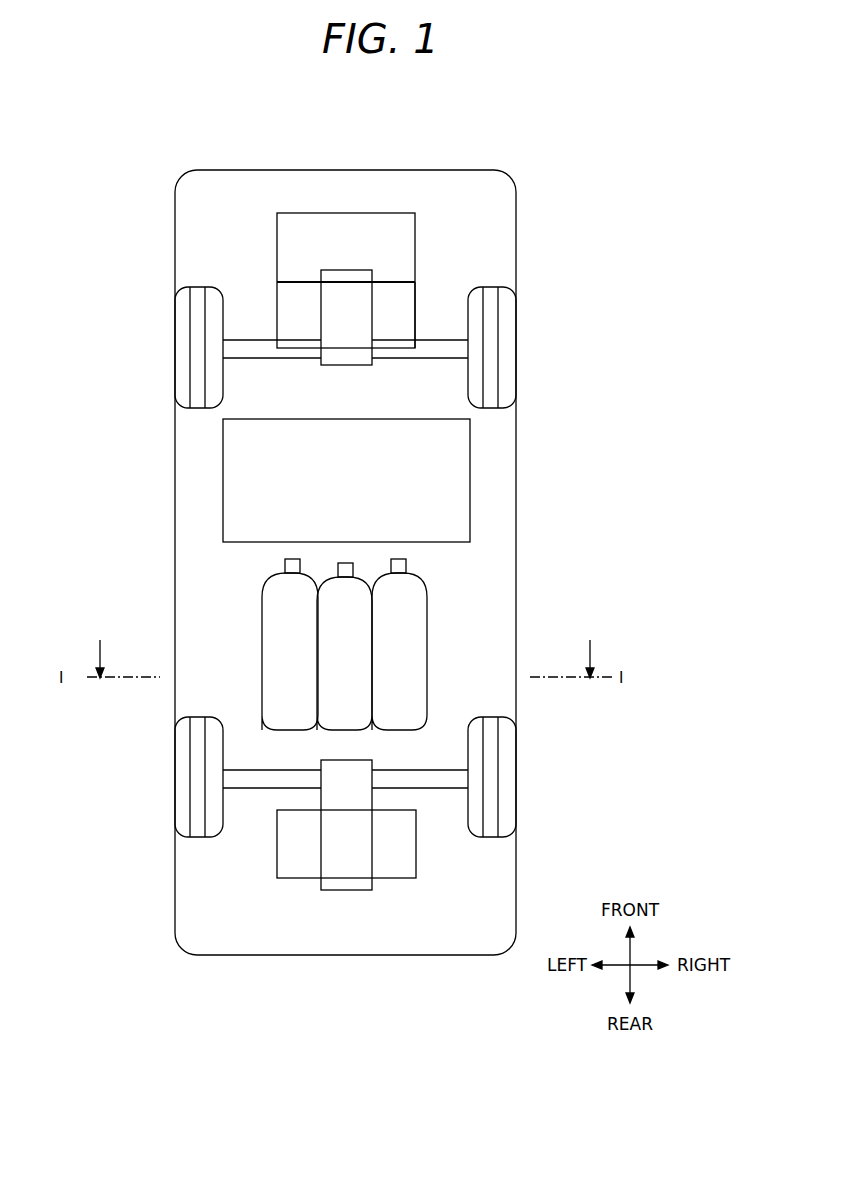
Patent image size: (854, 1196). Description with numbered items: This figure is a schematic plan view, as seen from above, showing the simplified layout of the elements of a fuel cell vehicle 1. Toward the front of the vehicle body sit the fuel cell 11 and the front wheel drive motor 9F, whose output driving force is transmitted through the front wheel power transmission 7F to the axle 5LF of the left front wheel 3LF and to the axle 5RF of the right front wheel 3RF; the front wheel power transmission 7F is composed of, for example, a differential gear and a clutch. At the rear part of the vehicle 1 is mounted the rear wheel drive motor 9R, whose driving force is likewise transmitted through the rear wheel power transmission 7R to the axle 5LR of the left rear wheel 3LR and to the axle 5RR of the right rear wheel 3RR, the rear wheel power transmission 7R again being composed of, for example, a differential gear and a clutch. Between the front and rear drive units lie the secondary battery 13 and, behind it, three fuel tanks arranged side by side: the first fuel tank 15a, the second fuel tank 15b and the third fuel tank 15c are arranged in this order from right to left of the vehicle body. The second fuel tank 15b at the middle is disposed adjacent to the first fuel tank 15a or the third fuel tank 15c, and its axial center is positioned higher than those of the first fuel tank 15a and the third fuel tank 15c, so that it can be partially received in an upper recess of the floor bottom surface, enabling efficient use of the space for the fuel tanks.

The fuel cell vehicle 1 is at (621, 852).
The left front wheel 3LF is at (178, 305).
The right front wheel 3RF is at (514, 305).
The left rear wheel 3LR is at (178, 755).
The right rear wheel 3RR is at (514, 755).
The axle of left front wheel 5LF is at (250, 340).
The axle of right front wheel 5RF is at (407, 297).
The axle of left rear wheel 5LR is at (248, 778).
The axle of right rear wheel 5RR is at (443, 778).
The front wheel power transmission 7F is at (330, 323).
The rear wheel power transmission 7R is at (330, 803).
The front wheel drive motor 9F is at (433, 347).
The rear wheel drive motor 9R is at (392, 863).
The fuel cell 11 is at (392, 227).
The secondary battery 13 is at (242, 482).
The first fuel tank 15a is at (417, 645).
The second fuel tank 15b is at (357, 608).
The third fuel tank 15c is at (273, 645).